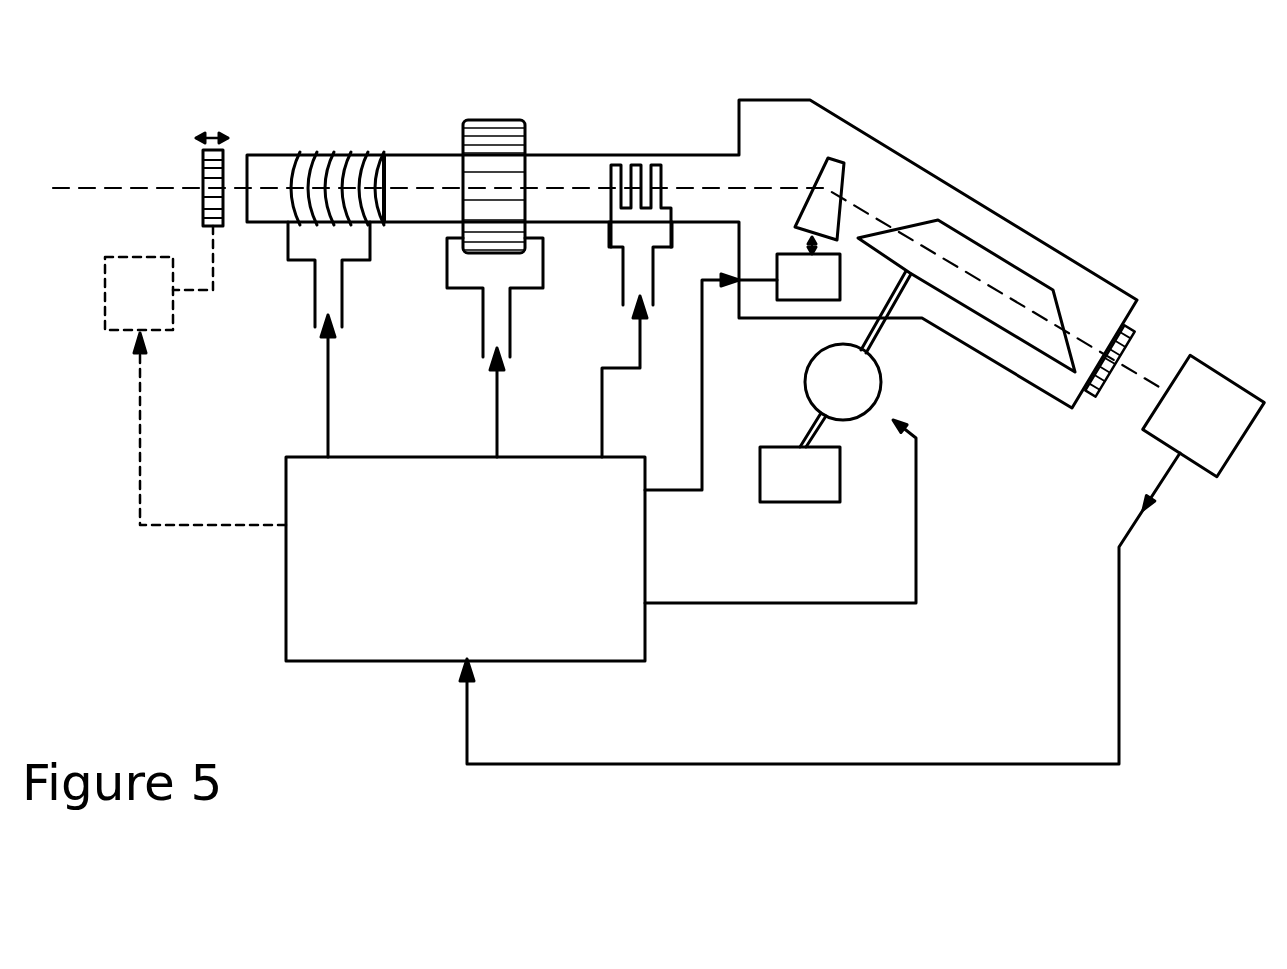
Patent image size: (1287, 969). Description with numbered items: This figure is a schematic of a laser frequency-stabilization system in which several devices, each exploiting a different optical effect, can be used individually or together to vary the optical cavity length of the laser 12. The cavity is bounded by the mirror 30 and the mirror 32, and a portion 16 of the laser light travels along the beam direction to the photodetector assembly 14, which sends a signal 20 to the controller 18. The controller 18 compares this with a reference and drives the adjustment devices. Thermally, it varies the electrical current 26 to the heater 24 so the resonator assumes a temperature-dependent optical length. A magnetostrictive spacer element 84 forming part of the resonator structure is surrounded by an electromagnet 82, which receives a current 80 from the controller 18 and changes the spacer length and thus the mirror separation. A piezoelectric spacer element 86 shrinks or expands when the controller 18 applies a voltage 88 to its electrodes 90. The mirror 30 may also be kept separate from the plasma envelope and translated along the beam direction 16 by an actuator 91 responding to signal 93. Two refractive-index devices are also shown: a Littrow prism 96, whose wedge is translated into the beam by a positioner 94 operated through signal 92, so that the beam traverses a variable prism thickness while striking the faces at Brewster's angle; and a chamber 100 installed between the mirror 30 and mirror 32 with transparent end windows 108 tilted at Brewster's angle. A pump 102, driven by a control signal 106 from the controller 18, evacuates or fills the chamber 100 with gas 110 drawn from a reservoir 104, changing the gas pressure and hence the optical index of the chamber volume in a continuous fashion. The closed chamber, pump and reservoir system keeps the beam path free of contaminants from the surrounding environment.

The laser 12 is at (763, 98).
The photodetector assembly 14 is at (1220, 367).
The portion of laser light 16 is at (138, 188).
The controller 18 is at (332, 662).
The signal 20 is at (1120, 575).
The heater 24 is at (607, 264).
The electrical current 26 is at (638, 341).
The mirror 30 is at (203, 170).
The mirror 32 is at (1140, 330).
The current 80 is at (328, 366).
The electromagnet 82 is at (286, 281).
The magnetostrictive spacer element 84 is at (384, 153).
The piezoelectric spacer element 86 is at (483, 120).
The voltage 88 is at (495, 412).
The electrodes 90 is at (528, 140).
The actuator 91 is at (105, 305).
The signal 92 is at (718, 279).
The signal 93 is at (140, 505).
The positioner 94 is at (817, 300).
The Littrow prism 96 is at (832, 156).
The chamber 100 is at (1008, 332).
The pump 102 is at (805, 378).
The reservoir 104 is at (841, 456).
The control signal 106 is at (917, 473).
The transparent end windows 108 is at (913, 220).
The gas 110 is at (802, 485).